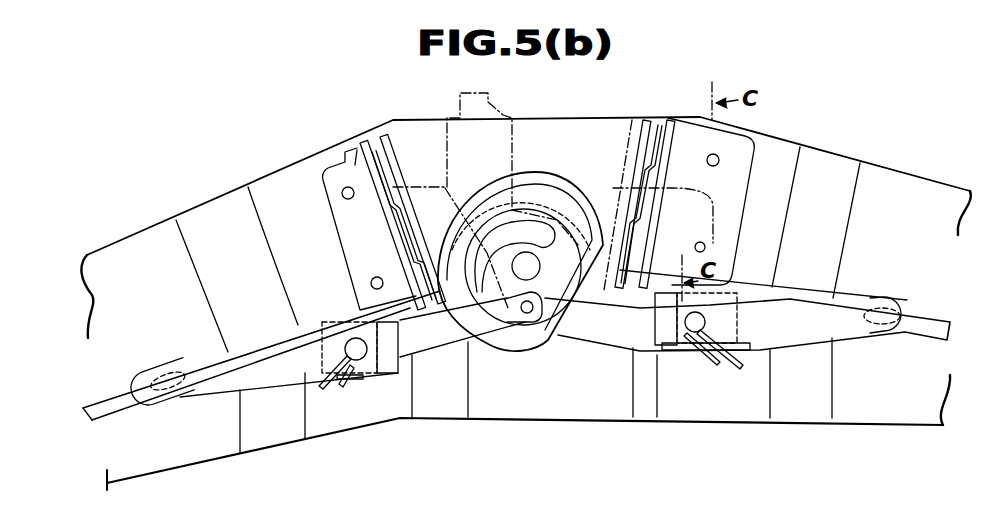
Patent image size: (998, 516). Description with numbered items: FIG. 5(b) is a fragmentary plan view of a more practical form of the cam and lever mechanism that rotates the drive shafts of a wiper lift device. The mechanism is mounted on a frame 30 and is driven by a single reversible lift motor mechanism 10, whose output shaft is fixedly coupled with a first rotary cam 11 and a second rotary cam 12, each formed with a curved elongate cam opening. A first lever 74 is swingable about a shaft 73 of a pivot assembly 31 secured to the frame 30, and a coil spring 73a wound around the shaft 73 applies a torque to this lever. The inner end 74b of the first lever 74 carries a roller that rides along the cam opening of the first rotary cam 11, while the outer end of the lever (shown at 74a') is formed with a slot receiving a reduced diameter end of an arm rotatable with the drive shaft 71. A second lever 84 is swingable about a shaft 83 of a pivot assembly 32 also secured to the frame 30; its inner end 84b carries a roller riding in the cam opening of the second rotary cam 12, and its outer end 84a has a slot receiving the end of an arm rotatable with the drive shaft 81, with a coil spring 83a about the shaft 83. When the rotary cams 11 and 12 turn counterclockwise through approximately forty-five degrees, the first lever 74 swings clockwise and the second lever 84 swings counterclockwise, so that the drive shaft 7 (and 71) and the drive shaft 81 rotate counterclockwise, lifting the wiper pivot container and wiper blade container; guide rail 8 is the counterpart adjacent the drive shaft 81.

The drive shaft 7 is at (664, 119).
The guide rail 8 is at (365, 136).
The lift motor mechanism 10 is at (488, 128).
The first rotary cam 11 is at (577, 190).
The second rotary cam 12 is at (497, 340).
The frame 30 is at (607, 407).
The pivot assembly 31 is at (667, 350).
The pivot assembly 32 is at (393, 387).
The drive shaft 71 is at (800, 287).
The shaft 73 is at (688, 352).
The coil spring 73a is at (743, 366).
The first lever 74 is at (797, 330).
The slot end 74a' is at (891, 375).
The inner end of the first lever 74b is at (540, 312).
The drive shaft 81 is at (275, 350).
The shaft 83 is at (375, 380).
The pin 83a is at (318, 380).
The second lever 84 is at (283, 375).
The outer end of the second lever 84a is at (180, 390).
The inner end of the second lever 84b is at (517, 335).